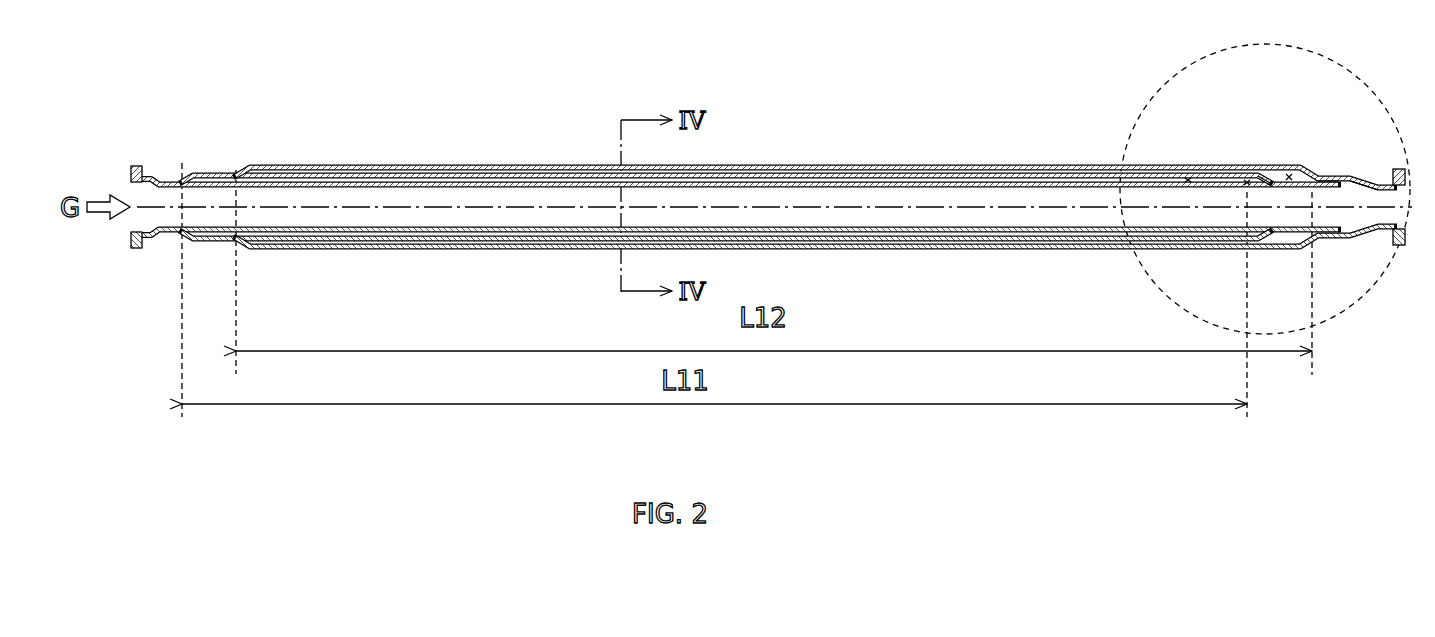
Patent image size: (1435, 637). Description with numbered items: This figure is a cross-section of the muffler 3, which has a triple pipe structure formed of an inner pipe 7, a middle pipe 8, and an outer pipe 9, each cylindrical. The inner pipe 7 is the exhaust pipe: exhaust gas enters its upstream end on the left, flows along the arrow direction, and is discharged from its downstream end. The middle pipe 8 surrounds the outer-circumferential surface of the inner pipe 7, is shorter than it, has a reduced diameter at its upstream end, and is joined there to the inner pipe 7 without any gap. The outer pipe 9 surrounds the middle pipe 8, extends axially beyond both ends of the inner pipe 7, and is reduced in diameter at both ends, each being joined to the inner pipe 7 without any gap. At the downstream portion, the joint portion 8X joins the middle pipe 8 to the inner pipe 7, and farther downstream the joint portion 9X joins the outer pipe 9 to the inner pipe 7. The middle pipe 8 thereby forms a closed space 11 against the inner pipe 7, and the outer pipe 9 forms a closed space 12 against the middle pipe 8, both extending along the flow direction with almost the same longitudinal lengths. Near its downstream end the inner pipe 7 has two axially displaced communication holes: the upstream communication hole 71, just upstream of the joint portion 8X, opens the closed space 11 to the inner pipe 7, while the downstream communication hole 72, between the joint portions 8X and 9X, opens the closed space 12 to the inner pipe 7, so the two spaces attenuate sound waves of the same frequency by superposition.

The muffler 3 is at (974, 92).
The inner pipe 7 is at (209, 184).
The middle pipe 8 is at (292, 175).
The outer pipe 9 is at (334, 166).
The closed space 11 is at (1188, 176).
The communication hole 71 is at (1247, 182).
The joint portion 8X is at (1271, 180).
The closed space 12 is at (1289, 174).
The communication hole 72 is at (1314, 178).
The joint portion 9X is at (1358, 178).